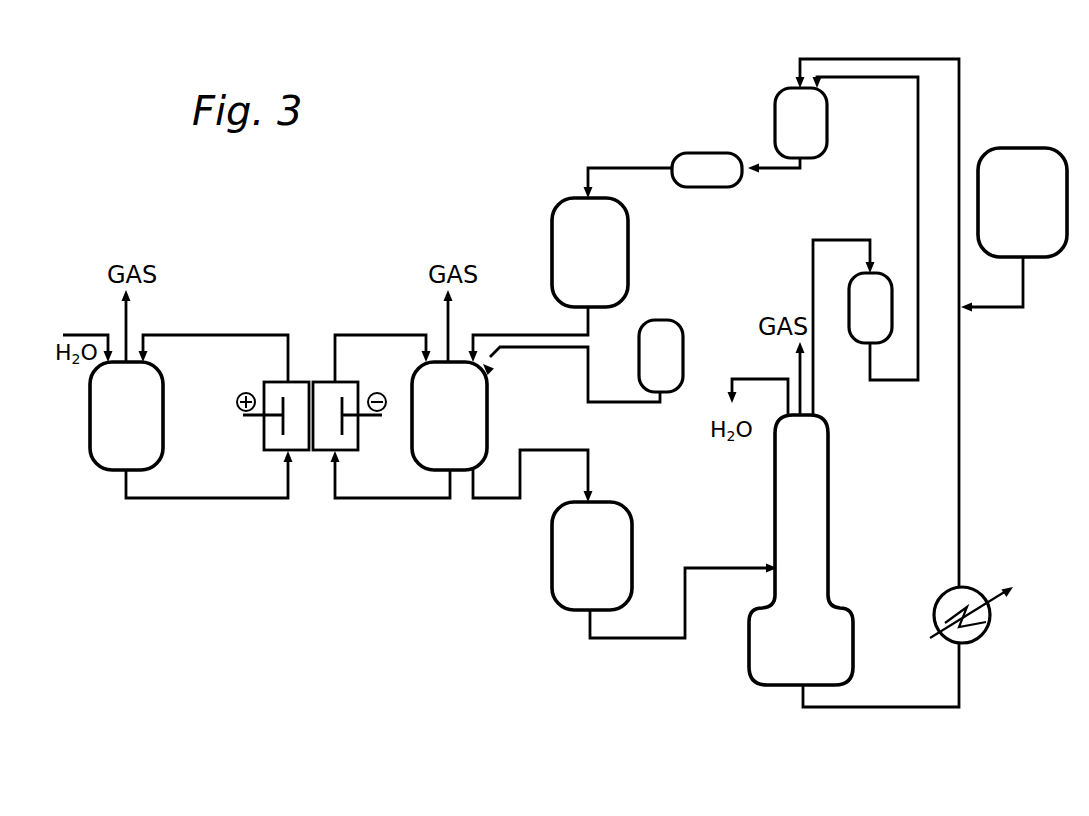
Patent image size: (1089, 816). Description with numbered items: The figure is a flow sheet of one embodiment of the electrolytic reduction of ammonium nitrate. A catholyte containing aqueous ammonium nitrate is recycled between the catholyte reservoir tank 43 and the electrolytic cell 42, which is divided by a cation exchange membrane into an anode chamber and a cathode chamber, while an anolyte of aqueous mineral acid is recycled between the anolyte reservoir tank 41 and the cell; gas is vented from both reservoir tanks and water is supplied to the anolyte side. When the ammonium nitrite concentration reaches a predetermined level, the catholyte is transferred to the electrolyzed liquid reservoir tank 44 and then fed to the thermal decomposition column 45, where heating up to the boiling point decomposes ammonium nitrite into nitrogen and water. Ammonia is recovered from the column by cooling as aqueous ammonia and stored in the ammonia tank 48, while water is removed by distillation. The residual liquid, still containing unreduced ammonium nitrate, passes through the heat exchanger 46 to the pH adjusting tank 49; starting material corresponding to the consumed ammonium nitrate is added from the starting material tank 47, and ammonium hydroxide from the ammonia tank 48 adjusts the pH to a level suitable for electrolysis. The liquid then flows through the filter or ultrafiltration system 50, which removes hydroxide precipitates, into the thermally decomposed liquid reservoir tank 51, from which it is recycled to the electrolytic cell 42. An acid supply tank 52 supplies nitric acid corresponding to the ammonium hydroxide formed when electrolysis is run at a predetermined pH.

The anolyte reservoir tank 41 is at (117, 455).
The electrolytic cell 42 is at (305, 387).
The catholyte reservoir tank 43 is at (478, 402).
The electrolyzed liquid reservoir tank 44 is at (619, 536).
The thermal decomposition column 45 is at (829, 527).
The heat exchanger 46 is at (985, 627).
The starting material tank 47 is at (1048, 240).
The ammonia tank 48 is at (882, 283).
The pH adjusting tank 49 is at (816, 143).
The filter or ultrafiltration system 50 is at (709, 174).
The thermally decomposed liquid reservoir tank 51 is at (615, 261).
The acid supply tank 52 is at (671, 343).